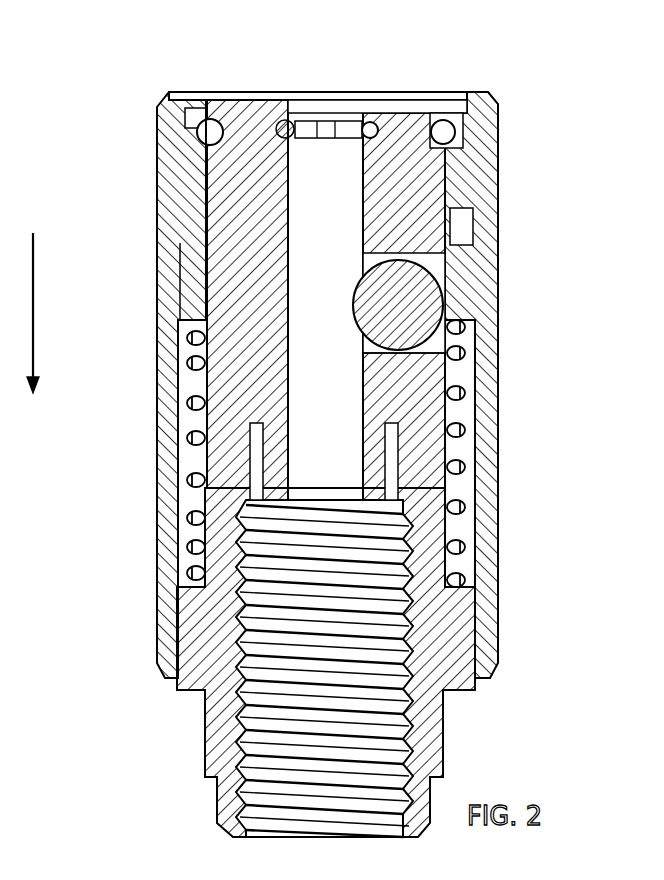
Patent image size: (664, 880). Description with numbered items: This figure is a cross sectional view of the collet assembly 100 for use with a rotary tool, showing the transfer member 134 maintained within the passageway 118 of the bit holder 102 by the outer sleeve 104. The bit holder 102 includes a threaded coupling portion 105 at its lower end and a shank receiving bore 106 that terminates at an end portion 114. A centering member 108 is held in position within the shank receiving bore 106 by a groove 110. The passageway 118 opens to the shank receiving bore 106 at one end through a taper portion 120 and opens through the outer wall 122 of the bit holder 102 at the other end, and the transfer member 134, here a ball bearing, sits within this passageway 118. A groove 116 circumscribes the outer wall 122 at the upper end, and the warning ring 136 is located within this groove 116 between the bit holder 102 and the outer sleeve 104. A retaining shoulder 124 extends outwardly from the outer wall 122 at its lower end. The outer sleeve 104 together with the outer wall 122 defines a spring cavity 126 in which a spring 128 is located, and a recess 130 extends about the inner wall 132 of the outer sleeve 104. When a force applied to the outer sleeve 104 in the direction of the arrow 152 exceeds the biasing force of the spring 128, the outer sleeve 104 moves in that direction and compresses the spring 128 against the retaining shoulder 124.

The collet assembly 100 is at (573, 90).
The bit holder 102 is at (245, 91).
The outer sleeve 104 is at (157, 240).
The threaded coupling portion 105 is at (437, 723).
The shank receiving bore 106 is at (296, 196).
The centering member 108 is at (340, 112).
The groove 110 is at (456, 147).
The end portion 114 is at (333, 483).
The groove 116 is at (376, 140).
The passageway 118 is at (400, 352).
The taper portion 120 is at (440, 383).
The outer wall 122 is at (180, 380).
The retaining shoulder 124 is at (470, 580).
The spring cavity 126 is at (191, 463).
The spring 128 is at (157, 585).
The recess 130 is at (463, 225).
The inner wall 132 is at (215, 288).
The transfer member 134 is at (480, 265).
The warning ring 136 is at (157, 120).
The arrow 152 is at (33, 343).